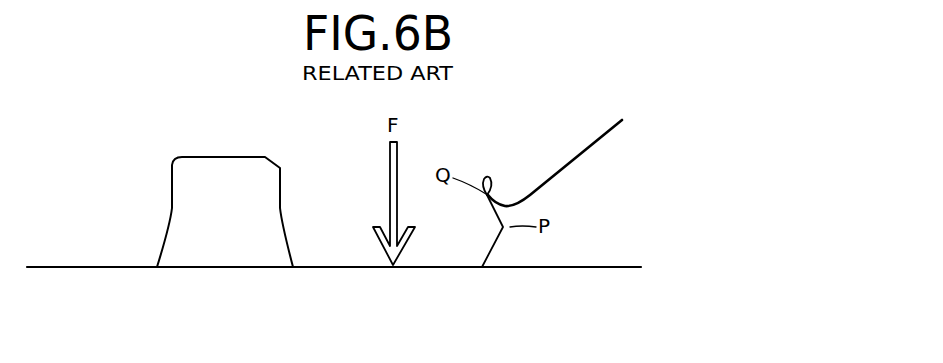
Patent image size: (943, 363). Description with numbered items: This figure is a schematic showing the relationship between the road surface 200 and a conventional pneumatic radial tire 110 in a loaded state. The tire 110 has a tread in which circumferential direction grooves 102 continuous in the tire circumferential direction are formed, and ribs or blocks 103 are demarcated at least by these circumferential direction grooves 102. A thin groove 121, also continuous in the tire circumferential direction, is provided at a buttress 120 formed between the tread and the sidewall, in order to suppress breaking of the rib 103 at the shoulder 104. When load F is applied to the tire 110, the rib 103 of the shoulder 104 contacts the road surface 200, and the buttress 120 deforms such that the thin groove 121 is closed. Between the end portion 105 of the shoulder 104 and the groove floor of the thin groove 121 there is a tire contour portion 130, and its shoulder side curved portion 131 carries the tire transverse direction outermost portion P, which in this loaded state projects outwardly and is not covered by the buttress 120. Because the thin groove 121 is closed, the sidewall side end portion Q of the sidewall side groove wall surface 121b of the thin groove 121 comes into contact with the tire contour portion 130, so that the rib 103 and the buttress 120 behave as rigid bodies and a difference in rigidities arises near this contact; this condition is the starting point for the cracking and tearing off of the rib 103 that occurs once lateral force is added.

The pneumatic radial tire 110 is at (93, 93).
The circumferential direction groove 102 is at (217, 162).
The rib 103 is at (83, 253).
The shoulder 104 is at (392, 270).
The end portion 105 is at (481, 270).
The buttress 120 is at (583, 158).
The thin groove 121 is at (487, 177).
The sidewall side groove wall surface 121b is at (491, 182).
The tire contour portion 130 is at (498, 243).
The shoulder side curved portion 131 is at (501, 228).
The road surface 200 is at (582, 268).